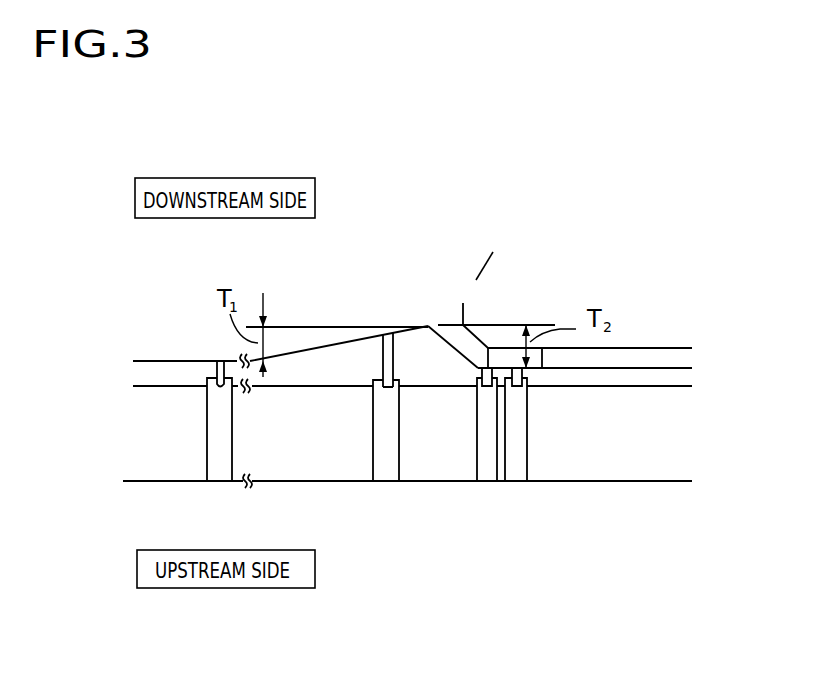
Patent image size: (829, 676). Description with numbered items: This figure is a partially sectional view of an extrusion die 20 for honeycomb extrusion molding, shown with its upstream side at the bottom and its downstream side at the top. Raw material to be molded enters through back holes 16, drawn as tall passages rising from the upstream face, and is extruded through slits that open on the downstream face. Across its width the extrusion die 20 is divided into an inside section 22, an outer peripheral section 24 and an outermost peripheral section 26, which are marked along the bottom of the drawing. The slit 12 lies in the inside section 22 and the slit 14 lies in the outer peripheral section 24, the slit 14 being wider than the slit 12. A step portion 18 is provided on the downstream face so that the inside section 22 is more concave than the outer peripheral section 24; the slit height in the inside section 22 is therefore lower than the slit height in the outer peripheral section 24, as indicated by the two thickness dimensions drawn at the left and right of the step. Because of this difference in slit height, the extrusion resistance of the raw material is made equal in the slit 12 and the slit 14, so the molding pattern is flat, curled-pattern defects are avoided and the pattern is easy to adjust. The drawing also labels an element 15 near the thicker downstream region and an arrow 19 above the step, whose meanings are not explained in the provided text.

The slit 12 is at (217, 373).
The slit 14 is at (390, 338).
The thick film portion 15 is at (490, 348).
The back hole 16 is at (220, 463).
The step portion 18 is at (428, 325).
The flow direction 19 is at (463, 303).
The extrusion die 20 is at (696, 467).
The inside section 22 is at (267, 603).
The outer peripheral section 24 is at (432, 613).
The outermost peripheral section 26 is at (441, 635).